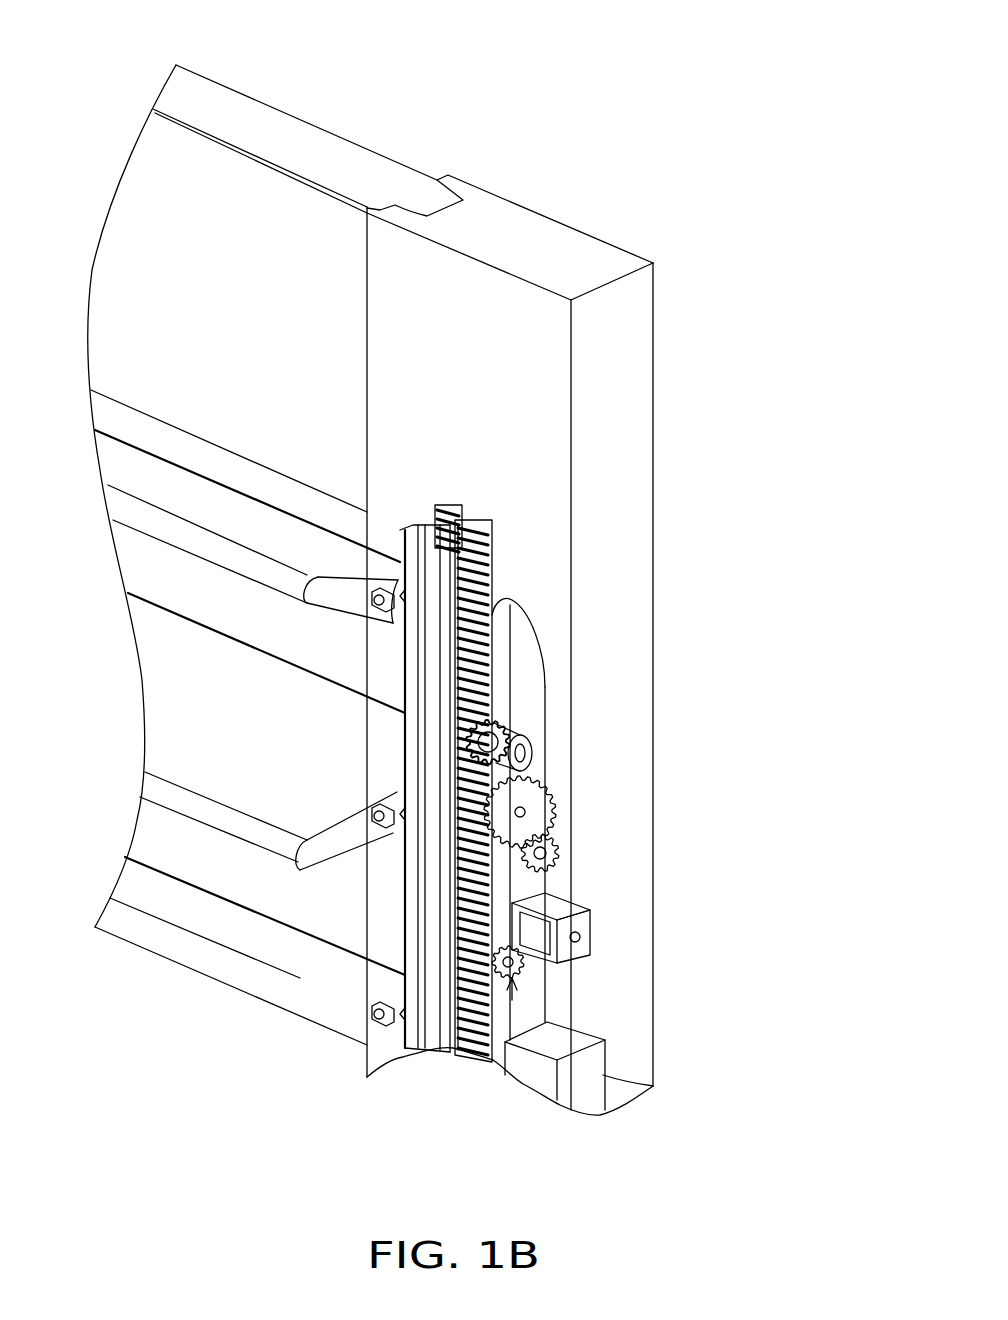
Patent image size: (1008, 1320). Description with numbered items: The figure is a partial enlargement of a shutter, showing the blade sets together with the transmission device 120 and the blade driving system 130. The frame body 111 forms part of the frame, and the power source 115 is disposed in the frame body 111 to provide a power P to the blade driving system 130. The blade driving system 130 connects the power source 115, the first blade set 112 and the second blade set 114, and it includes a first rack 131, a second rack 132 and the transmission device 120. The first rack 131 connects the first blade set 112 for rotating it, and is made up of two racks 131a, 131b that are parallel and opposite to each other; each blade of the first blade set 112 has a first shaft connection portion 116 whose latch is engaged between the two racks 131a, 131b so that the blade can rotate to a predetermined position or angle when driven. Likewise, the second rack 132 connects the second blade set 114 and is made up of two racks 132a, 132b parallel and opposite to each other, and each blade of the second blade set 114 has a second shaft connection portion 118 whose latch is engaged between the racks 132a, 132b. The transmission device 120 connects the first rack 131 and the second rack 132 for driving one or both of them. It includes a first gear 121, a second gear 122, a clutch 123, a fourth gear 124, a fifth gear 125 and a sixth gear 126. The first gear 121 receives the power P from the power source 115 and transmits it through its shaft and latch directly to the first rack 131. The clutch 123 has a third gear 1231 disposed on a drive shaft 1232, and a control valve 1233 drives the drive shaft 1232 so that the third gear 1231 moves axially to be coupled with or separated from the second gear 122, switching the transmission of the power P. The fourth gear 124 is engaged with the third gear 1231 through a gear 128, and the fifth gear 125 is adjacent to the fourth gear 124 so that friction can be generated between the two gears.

The frame body 111 is at (553, 257).
The first blade set 112 is at (125, 470).
The second blade set 114 is at (142, 682).
The power source 115 is at (625, 1088).
The first shaft connection portion 116 is at (385, 1028).
The second shaft connection portion 118 is at (353, 847).
The transmission device 120 is at (656, 819).
The first gear 121 is at (530, 1000).
The second gear 122 is at (562, 862).
The clutch 123 is at (652, 904).
The third gear 1231 is at (548, 893).
The control valve 1233 is at (565, 922).
The drive shaft 1232 is at (649, 936).
The fourth gear 124 is at (535, 800).
The fifth gear 125 is at (524, 748).
The sixth gear 126 is at (547, 686).
The gear 128 is at (550, 848).
The blade driving system 130 is at (669, 677).
The first rack 131 is at (641, 422).
The rack 131a is at (455, 512).
The rack 131b is at (447, 508).
The second rack 132 is at (651, 724).
The rack 132a is at (475, 520).
The rack 132b is at (465, 516).
The power P is at (510, 1010).